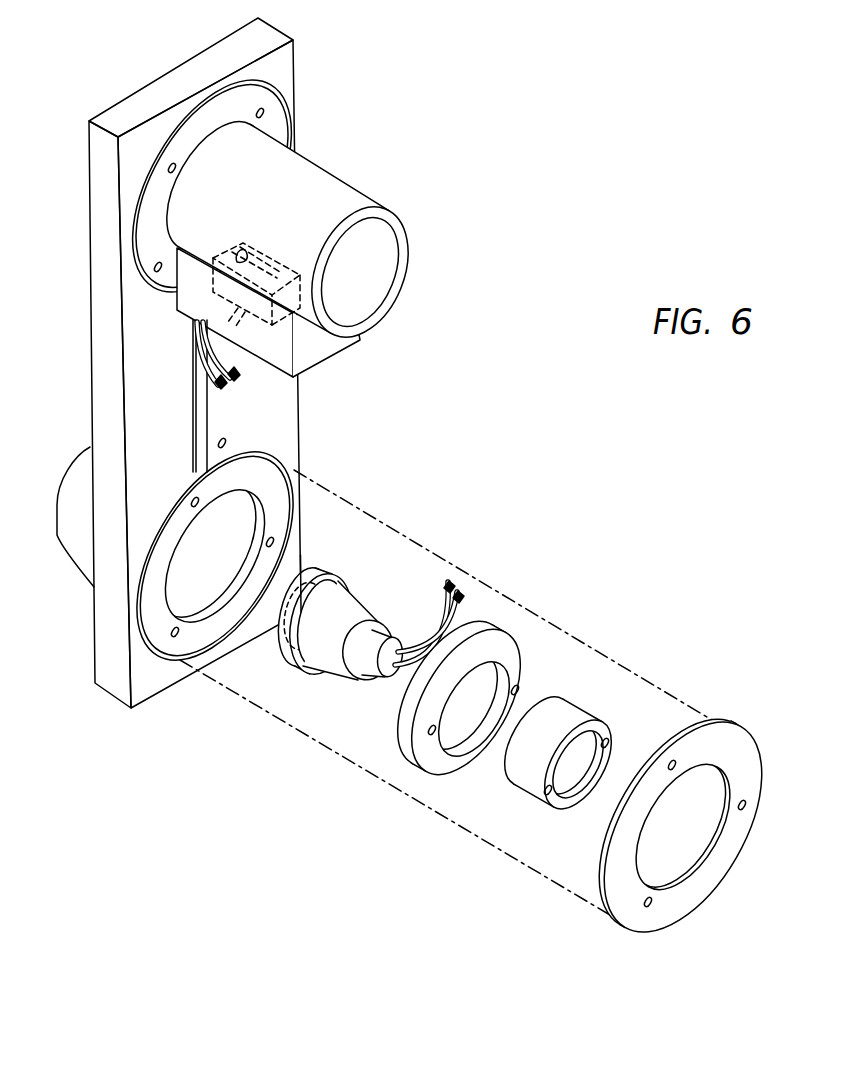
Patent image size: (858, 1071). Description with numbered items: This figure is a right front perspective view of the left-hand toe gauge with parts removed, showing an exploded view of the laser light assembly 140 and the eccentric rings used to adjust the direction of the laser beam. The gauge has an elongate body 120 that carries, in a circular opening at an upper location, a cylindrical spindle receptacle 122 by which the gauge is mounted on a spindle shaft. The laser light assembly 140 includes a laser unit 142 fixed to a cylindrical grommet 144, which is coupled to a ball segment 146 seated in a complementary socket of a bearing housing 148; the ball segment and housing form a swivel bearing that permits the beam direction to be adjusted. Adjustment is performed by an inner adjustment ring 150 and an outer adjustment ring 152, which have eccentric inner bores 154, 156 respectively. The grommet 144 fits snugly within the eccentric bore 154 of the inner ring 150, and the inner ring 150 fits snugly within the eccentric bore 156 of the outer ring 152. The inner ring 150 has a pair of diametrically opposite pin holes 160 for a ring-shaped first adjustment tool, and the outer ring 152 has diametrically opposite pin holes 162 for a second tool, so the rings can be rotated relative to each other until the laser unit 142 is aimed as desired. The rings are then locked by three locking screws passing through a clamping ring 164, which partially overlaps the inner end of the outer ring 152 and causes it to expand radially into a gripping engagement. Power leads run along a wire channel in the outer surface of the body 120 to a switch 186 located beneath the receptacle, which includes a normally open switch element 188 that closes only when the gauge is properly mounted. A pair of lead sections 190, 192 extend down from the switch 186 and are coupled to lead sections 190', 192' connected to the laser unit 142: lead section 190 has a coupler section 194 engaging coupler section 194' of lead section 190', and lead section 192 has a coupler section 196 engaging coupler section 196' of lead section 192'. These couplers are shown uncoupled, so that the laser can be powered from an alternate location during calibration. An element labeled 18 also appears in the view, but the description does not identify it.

The slot in mounting plate 18 is at (195, 447).
The elongate body 120 is at (302, 452).
The cylindrical spindle receptacle 122 is at (256, 197).
The laser light assembly 140 is at (373, 545).
The laser unit 142 is at (376, 662).
The cylindrical grommet 144 is at (336, 658).
The ball segment 146 is at (283, 657).
The bearing housing 148 is at (316, 568).
The inner adjustment ring 150 is at (540, 782).
The outer adjustment ring 152 is at (481, 637).
The eccentric inner bore 154 is at (247, 549).
The eccentric inner bore 156 is at (494, 682).
The pin holes 160 is at (608, 742).
The pin holes 162 is at (519, 691).
The clamping ring 164 is at (746, 753).
The switch 186 is at (328, 353).
The switch element 188 is at (265, 249).
The lead section 190 is at (173, 353).
The lead section 192 is at (260, 389).
The coupler section 194 is at (179, 370).
The coupler section 196 is at (246, 412).
The lead section 190' is at (409, 613).
The lead section 192' is at (524, 599).
The coupler section 194' is at (466, 589).
The coupler section 196' is at (505, 572).